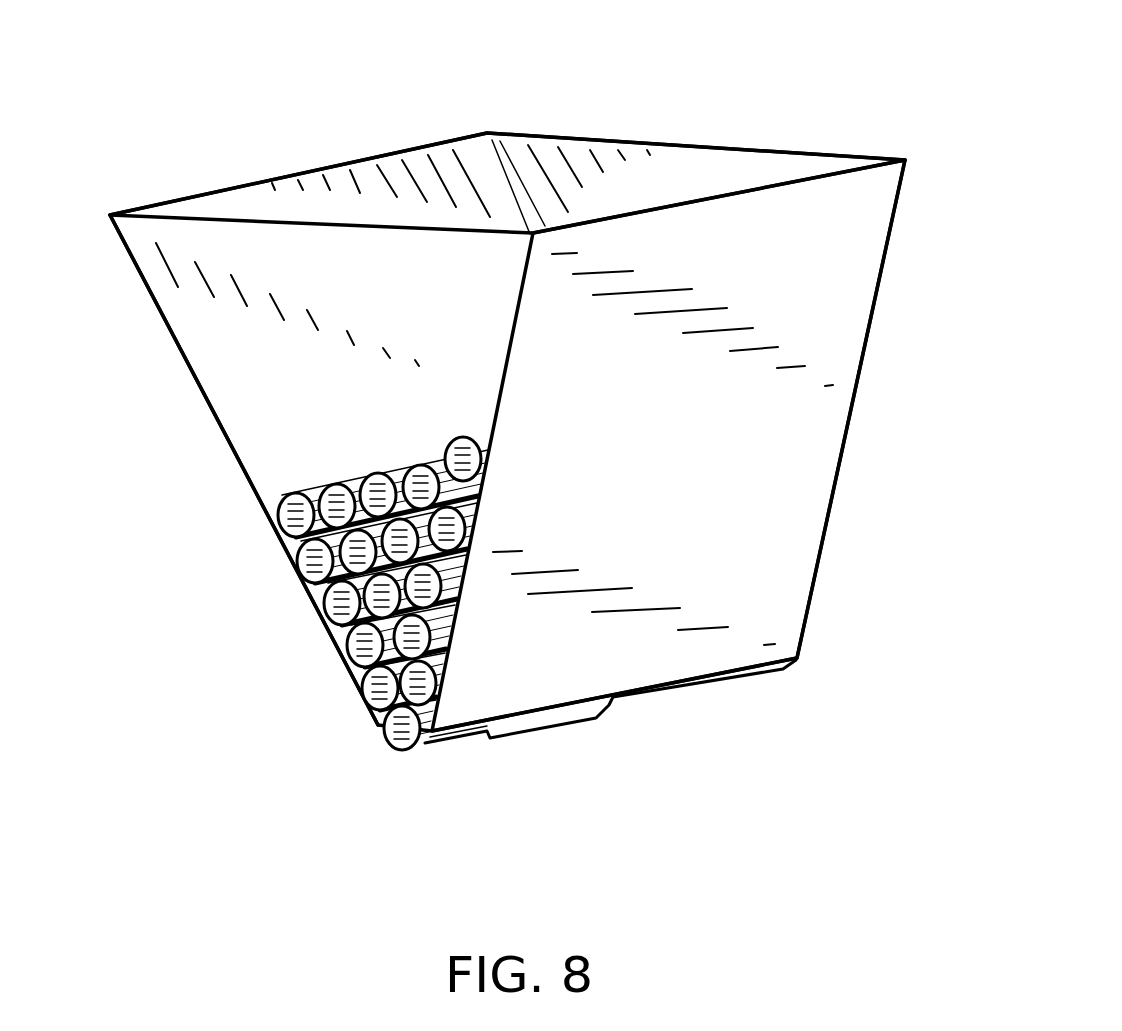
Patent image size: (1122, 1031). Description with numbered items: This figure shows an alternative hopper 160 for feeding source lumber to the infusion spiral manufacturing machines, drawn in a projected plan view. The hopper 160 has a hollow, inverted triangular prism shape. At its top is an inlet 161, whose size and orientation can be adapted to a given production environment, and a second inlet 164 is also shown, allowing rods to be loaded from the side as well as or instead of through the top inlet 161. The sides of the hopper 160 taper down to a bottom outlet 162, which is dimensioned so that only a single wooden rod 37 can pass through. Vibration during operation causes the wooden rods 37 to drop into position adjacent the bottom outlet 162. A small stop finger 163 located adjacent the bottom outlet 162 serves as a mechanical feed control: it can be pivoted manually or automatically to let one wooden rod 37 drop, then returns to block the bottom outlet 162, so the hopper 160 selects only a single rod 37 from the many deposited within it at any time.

The hopper 160 is at (796, 60).
The inlet 161 is at (385, 112).
The bottom outlet 162 is at (708, 384).
The stop finger 163 is at (547, 724).
The second inlet 164 is at (176, 442).
The wooden rod 37 is at (385, 468).